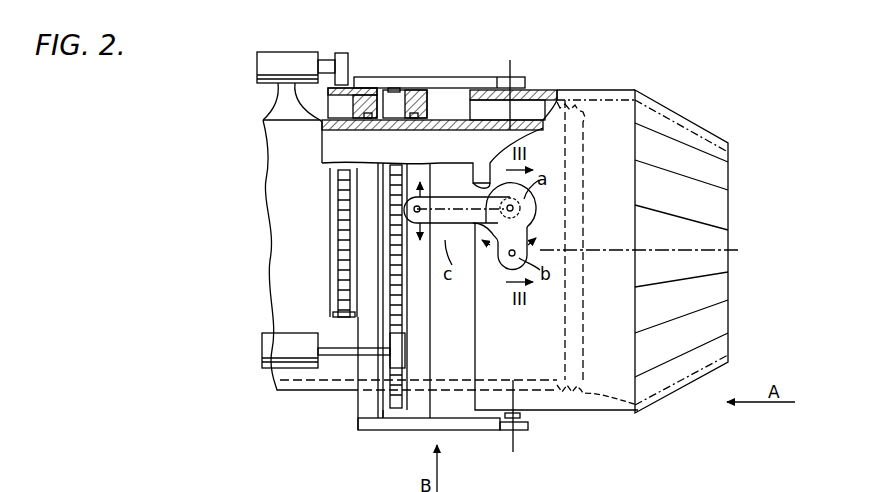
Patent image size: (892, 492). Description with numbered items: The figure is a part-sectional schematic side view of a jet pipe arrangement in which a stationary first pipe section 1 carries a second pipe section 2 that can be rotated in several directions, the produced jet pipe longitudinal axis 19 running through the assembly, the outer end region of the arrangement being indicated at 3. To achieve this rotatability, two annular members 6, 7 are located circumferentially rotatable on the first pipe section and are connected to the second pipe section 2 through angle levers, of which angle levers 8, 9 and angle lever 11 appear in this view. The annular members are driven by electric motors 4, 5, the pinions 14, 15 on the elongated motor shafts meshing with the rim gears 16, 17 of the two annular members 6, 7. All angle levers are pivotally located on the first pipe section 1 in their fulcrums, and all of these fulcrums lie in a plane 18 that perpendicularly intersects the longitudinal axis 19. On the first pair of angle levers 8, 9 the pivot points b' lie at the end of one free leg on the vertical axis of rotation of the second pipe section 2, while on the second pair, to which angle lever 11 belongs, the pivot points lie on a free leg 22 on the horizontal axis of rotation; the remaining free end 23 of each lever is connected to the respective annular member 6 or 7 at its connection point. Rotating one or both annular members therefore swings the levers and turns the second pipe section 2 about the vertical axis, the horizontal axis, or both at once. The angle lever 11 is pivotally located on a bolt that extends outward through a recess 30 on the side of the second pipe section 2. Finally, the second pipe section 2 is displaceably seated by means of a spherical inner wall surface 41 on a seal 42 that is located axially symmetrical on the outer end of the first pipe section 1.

The first pipe section 1 is at (345, 388).
The second pipe section 2 is at (630, 414).
The drum 3 is at (705, 375).
The electric motor 4 is at (286, 53).
The electric motor 5 is at (266, 348).
The first annular member 6 is at (377, 416).
The second annular member 7 is at (422, 416).
The angle lever 8 is at (454, 78).
The angle lever 9 is at (480, 432).
The angle lever 11 is at (477, 217).
The pinion 14 is at (341, 53).
The pinion 15 is at (400, 355).
The rim gear 16 is at (338, 195).
The rim gear 17 is at (392, 210).
The plane 18 is at (514, 62).
The longitudinal axis 19 is at (600, 248).
The free leg 22 is at (520, 237).
The free end 23 is at (425, 203).
The recess 30 is at (490, 170).
The spherical inner wall surface 41 is at (532, 95).
The seal 42 is at (585, 100).
The pivot point b' is at (529, 250).